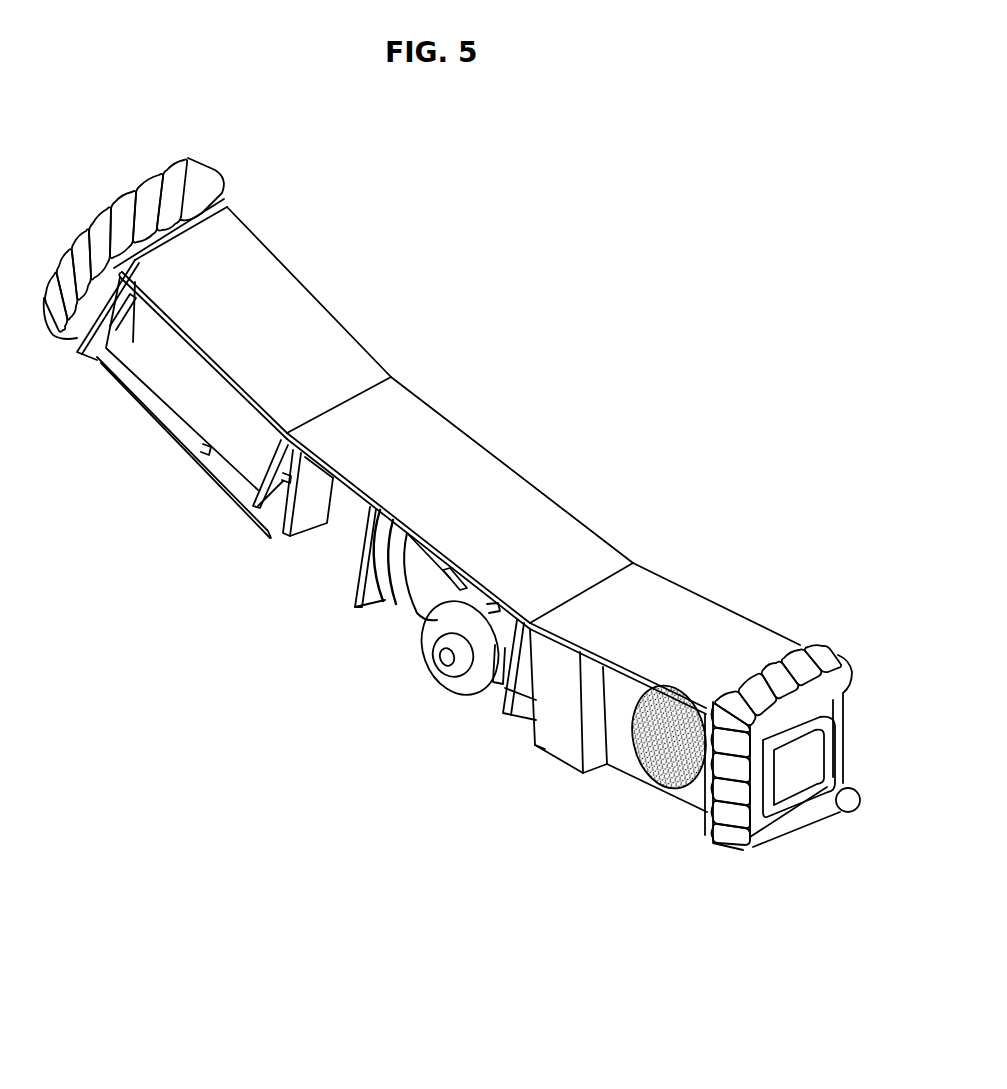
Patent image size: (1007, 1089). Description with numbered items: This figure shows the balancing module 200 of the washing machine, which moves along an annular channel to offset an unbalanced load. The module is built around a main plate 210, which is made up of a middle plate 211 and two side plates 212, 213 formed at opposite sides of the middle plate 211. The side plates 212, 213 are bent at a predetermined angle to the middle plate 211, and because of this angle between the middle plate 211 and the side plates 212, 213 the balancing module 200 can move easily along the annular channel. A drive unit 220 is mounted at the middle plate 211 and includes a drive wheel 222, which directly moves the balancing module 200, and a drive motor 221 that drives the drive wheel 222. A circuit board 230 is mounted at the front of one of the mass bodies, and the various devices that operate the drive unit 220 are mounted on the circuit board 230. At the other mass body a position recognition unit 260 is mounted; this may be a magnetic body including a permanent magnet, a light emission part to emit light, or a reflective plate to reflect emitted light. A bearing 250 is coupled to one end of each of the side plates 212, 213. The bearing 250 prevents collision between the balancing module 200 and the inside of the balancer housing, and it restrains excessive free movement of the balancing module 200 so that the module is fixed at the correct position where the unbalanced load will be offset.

The balancing module 200 is at (458, 170).
The main plate 210 is at (672, 424).
The middle plate 211 is at (477, 458).
The side plate 212 is at (347, 363).
The side plate 213 is at (648, 602).
The drive unit 220 is at (332, 630).
The drive motor 221 is at (393, 590).
The drive wheel 222 is at (477, 676).
The circuit board 230 is at (180, 373).
The bearing 250 is at (152, 178).
The position recognition unit 260 is at (657, 767).